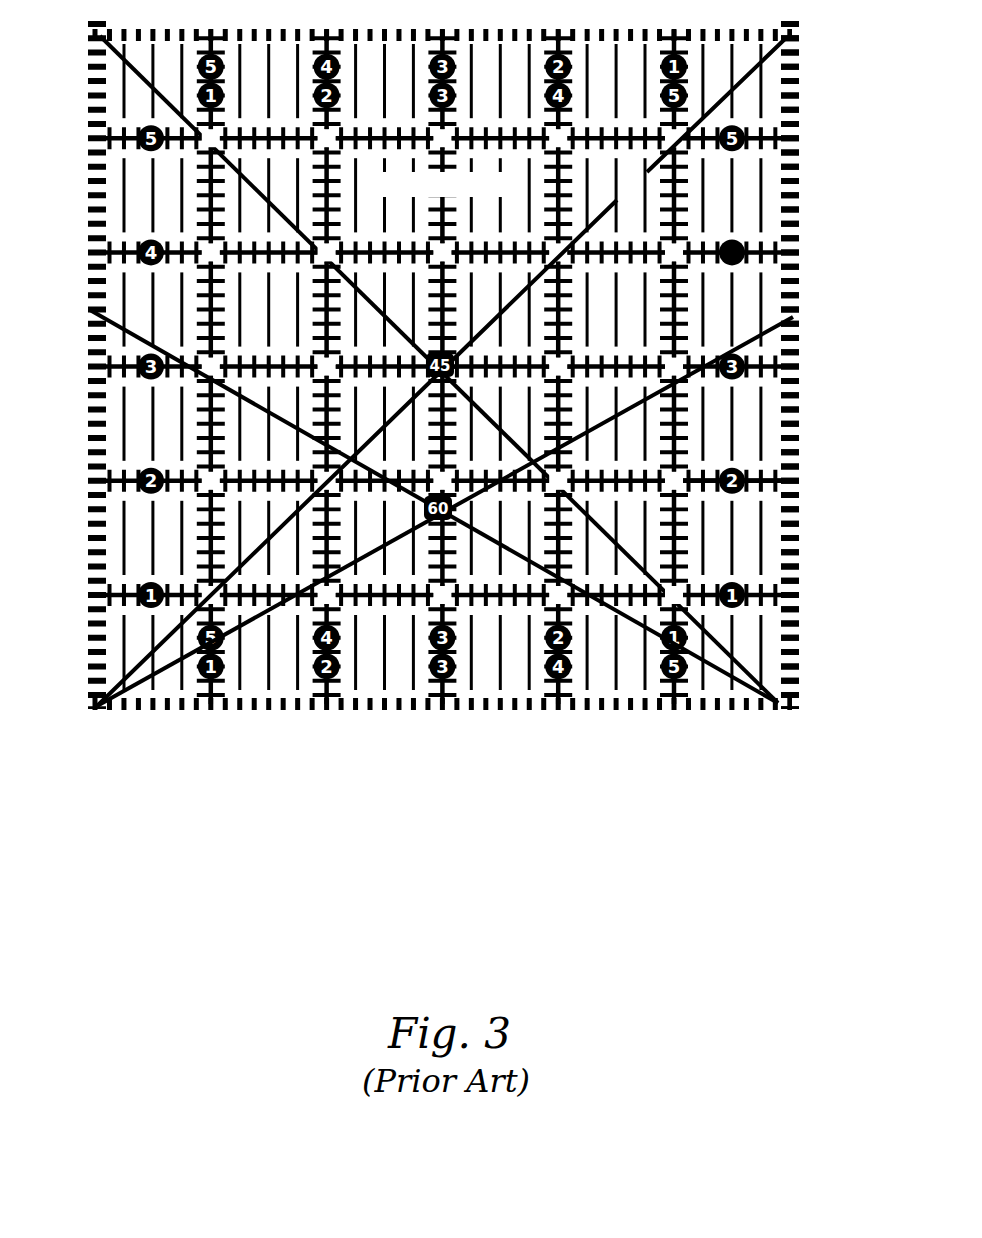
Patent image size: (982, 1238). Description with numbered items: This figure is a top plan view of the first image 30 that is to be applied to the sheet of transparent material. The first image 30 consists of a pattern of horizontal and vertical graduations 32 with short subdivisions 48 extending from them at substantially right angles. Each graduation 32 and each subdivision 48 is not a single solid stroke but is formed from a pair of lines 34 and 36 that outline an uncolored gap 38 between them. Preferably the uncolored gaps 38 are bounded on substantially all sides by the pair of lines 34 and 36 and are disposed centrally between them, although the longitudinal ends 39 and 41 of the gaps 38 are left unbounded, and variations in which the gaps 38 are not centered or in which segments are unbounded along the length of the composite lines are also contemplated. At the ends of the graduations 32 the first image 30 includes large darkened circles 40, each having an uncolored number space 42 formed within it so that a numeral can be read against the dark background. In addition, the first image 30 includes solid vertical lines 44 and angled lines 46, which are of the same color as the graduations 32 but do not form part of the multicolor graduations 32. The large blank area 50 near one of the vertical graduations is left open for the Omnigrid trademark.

The first image 30 is at (575, 758).
The graduations 32 is at (692, 530).
The line 34 is at (786, 480).
The line 36 is at (788, 486).
The uncolored gap 38 is at (800, 368).
The longitudinal end 39 is at (92, 363).
The large darkened circles 40 is at (735, 248).
The longitudinal end 41 is at (800, 370).
The uncolored number spaces 42 is at (752, 250).
The solid vertical lines 44 is at (768, 96).
The angled lines 46 is at (788, 40).
The short subdivisions 48 is at (782, 248).
The large blank area 50 is at (455, 182).